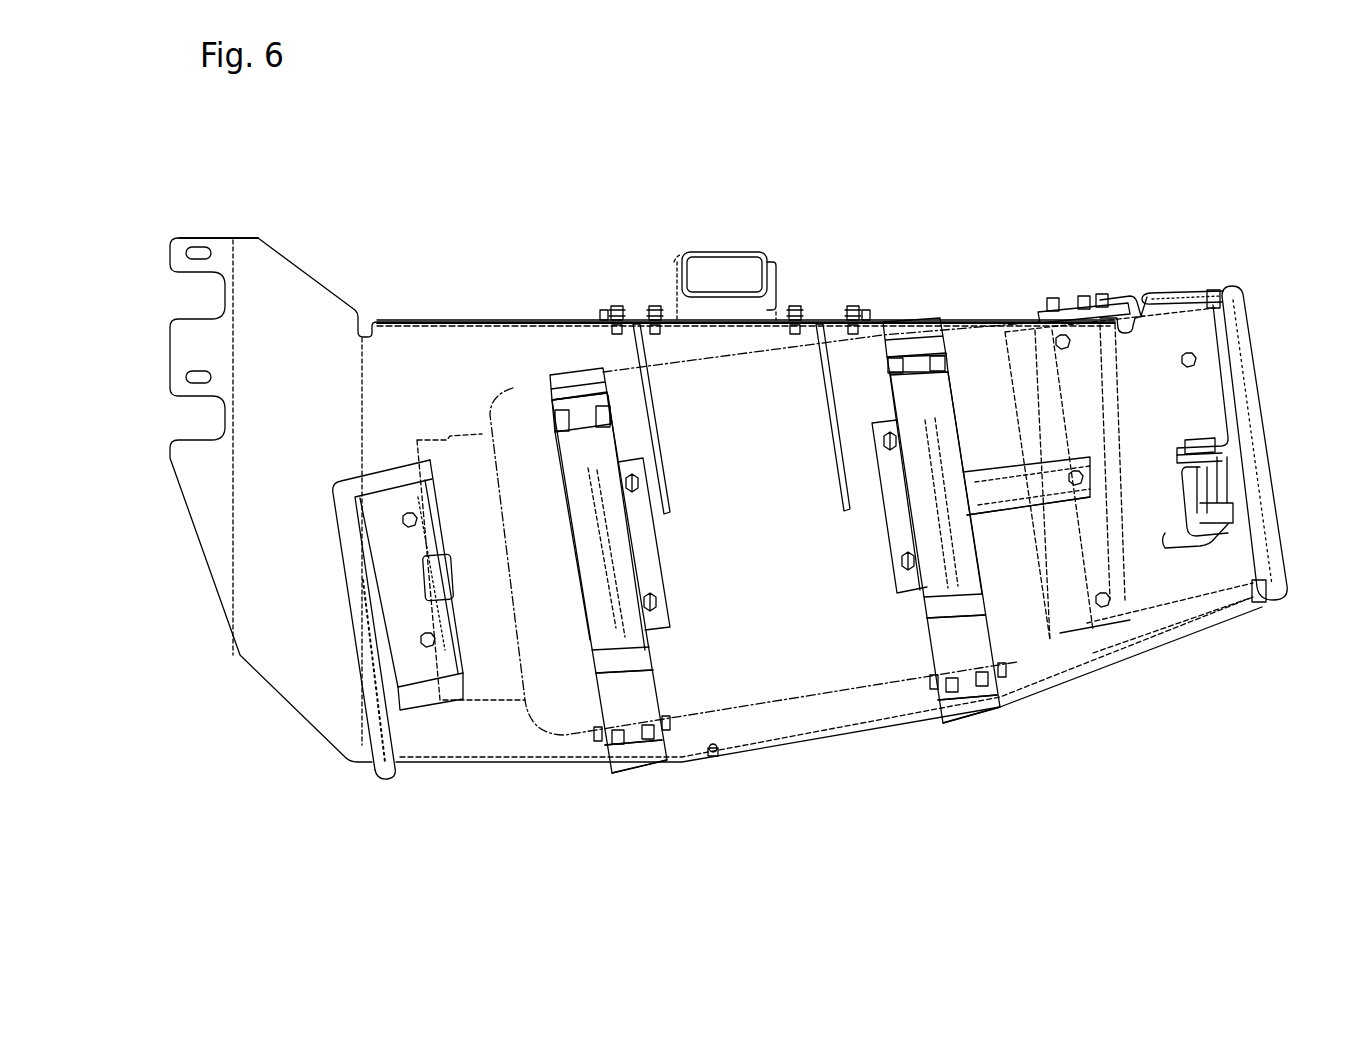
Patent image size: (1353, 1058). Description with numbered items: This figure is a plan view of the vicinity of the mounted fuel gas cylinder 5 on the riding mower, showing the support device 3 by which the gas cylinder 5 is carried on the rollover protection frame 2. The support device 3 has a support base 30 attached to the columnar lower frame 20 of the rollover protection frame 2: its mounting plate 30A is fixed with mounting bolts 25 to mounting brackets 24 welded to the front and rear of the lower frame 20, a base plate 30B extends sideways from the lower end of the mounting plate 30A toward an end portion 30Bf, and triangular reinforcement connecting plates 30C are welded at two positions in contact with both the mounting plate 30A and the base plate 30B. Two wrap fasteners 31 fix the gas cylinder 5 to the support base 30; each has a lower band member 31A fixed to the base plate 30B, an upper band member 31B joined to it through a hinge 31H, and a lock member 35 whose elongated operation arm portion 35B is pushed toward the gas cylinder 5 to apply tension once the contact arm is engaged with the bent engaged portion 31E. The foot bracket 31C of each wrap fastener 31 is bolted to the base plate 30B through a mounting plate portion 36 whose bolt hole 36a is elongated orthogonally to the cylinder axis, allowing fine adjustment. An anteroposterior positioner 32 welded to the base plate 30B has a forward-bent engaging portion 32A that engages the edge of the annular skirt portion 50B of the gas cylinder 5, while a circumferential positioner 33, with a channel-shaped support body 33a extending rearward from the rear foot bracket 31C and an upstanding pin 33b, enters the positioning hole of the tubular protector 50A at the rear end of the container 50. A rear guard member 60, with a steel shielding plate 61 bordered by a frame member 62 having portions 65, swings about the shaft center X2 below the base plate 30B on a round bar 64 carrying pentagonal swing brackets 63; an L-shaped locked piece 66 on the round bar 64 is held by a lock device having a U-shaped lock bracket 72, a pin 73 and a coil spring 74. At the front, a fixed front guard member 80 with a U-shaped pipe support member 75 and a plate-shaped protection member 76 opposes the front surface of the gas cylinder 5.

The rollover protection frame 2 is at (765, 480).
The support device 3 is at (820, 790).
The gas cylinder 5 is at (770, 705).
The lower frame 20 is at (726, 250).
The mounting brackets 24 is at (600, 312).
The mounting bolts 25 is at (655, 304).
The support base 30 is at (716, 498).
The mounting plate 30A is at (722, 330).
The base plate 30B is at (497, 745).
The side plate flange 30Bf is at (205, 236).
The reinforcement connecting plates 30C is at (654, 418).
The wrap fastener 31 is at (743, 536).
The lower band member 31A is at (555, 376).
The upper band member 31B is at (572, 485).
The foot bracket 31C is at (592, 578).
The engaged portion 31E is at (628, 775).
The hinge 31H is at (556, 420).
The anteroposterior positioner 32 is at (422, 578).
The engaging portion 32A is at (431, 585).
The circumferential positioner 33 is at (1029, 491).
The support body 33a is at (1003, 510).
The pin 33b is at (1073, 470).
The lock member 35 is at (800, 680).
The operation arm portion 35B is at (655, 688).
The mounting plate portion 36 is at (772, 504).
The bolt hole 36a is at (640, 488).
The container 50 is at (831, 541).
The tubular protector 50A is at (1075, 660).
The annular skirt portion 50B is at (448, 432).
The rear guard member 60 is at (1220, 438).
The shielding plate 61 is at (1268, 415).
The frame member 62 is at (1230, 286).
The swing bracket 63 is at (1055, 305).
The round bar 64 is at (1105, 370).
The clamp 65 is at (1210, 292).
The locked piece 66 is at (1190, 445).
The lock bracket 72 is at (1240, 478).
The clip 73 is at (1200, 438).
The coil spring 74 is at (1190, 478).
The support member 75 is at (345, 545).
The protection member 76 is at (365, 640).
The front guard member 80 is at (351, 619).
The shaft center X2 is at (1085, 298).